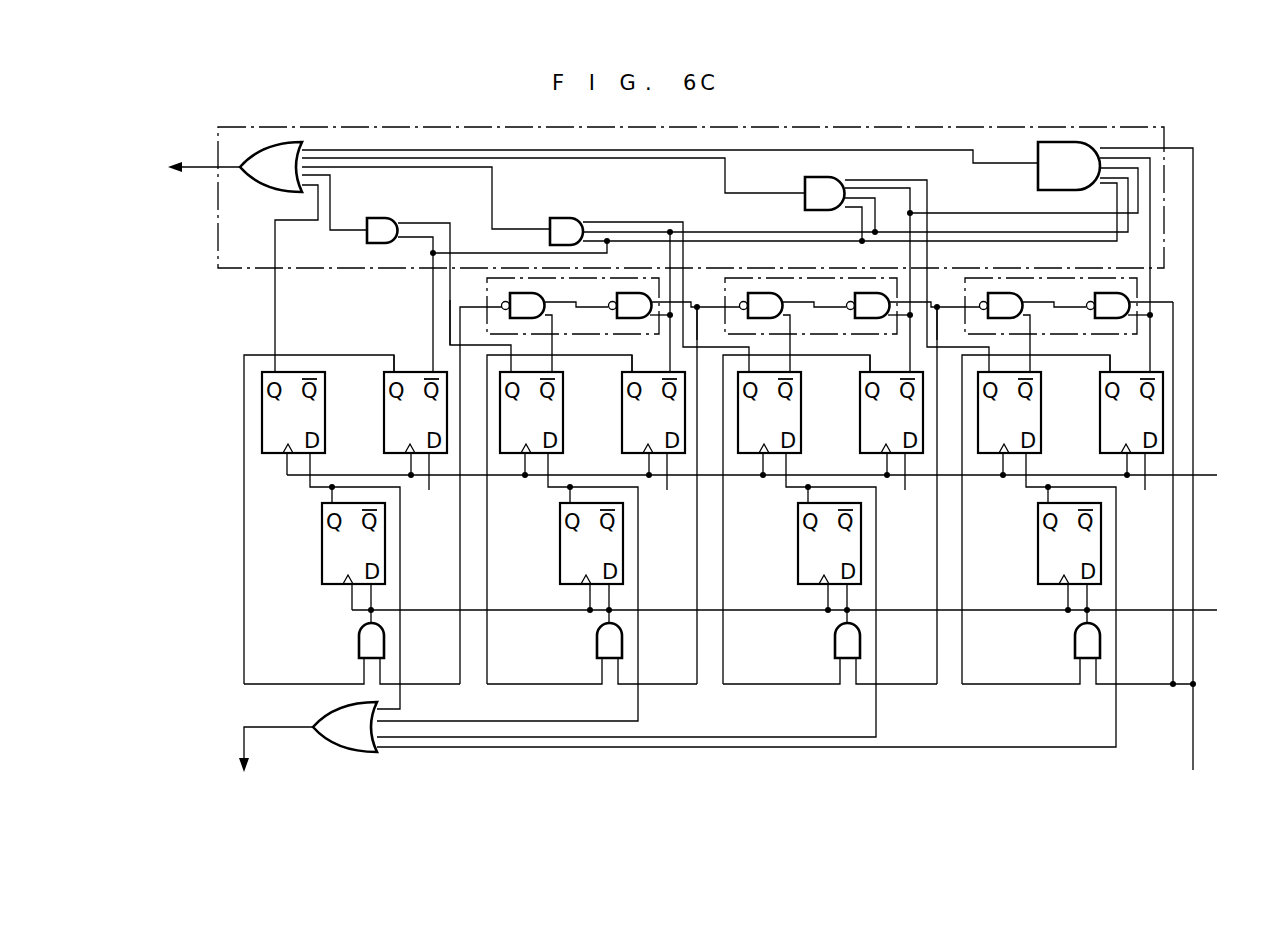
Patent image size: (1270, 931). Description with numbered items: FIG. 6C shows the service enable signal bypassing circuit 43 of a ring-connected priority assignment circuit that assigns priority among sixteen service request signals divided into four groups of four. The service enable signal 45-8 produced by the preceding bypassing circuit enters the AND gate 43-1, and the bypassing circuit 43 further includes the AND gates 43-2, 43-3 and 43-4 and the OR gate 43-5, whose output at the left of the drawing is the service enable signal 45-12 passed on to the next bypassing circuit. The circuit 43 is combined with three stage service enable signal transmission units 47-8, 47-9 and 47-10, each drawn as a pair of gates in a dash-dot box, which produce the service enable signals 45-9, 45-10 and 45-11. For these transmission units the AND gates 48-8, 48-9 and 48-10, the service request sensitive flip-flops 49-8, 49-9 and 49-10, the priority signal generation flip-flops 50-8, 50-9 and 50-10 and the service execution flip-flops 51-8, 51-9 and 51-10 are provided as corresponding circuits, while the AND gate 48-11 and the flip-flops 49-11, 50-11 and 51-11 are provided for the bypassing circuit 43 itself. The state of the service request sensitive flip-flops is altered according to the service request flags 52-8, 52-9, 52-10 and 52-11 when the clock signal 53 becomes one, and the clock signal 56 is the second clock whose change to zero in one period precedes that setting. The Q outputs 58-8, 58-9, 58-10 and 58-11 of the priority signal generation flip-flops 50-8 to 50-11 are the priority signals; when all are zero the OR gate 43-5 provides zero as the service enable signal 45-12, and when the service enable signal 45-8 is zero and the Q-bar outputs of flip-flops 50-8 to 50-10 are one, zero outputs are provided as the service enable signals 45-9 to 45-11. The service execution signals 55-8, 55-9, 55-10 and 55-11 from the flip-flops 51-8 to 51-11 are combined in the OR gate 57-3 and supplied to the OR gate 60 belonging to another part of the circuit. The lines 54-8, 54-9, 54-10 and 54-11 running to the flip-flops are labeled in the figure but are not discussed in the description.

The service enable signal bypassing circuit 43 is at (1118, 127).
The AND gate 43-1 is at (1050, 168).
The AND gate 43-2 is at (815, 190).
The AND gate 43-3 is at (566, 220).
The AND gate 43-4 is at (393, 200).
The OR gate 43-5 is at (275, 189).
The service enable signal 45-8 is at (1171, 459).
The service enable signal 45-9 is at (941, 300).
The service enable signal 45-10 is at (702, 300).
The service enable signal 45-11 is at (450, 322).
The service enable signal 45-12 is at (196, 153).
The service enable signal transmission unit 47-8 is at (1069, 325).
The service enable signal transmission unit 47-9 is at (831, 325).
The service enable signal transmission unit 47-10 is at (592, 325).
The AND gate 48-8 is at (1075, 642).
The AND gate 48-9 is at (835, 642).
The AND gate 48-10 is at (597, 642).
The AND gate 48-11 is at (359, 642).
The flip-flop responsive to service requests 49-8 is at (1118, 425).
The flip-flop responsive to service requests 49-9 is at (878, 425).
The flip-flop responsive to service requests 49-10 is at (640, 425).
The flip-flop responsive to service requests 49-11 is at (402, 425).
The flip-flop for producing priority signals 50-8 is at (1028, 402).
The flip-flop for producing priority signals 50-9 is at (788, 402).
The flip-flop for producing priority signals 50-10 is at (550, 402).
The flip-flop for producing priority signals 50-11 is at (312, 402).
The flip-flop for producing service execution signals 51-8 is at (1048, 546).
The flip-flop for producing service execution signals 51-9 is at (808, 546).
The flip-flop for producing service execution signals 51-10 is at (570, 546).
The flip-flop for producing service execution signals 51-11 is at (332, 546).
The service request flag 52-8 is at (773, 600).
The service request flag 52-9 is at (654, 595).
The service request flag 52-10 is at (540, 587).
The service request flag 52-11 is at (389, 581).
The clock signal 53 is at (767, 477).
The input line 54-8 is at (1104, 355).
The input line 54-9 is at (864, 355).
The input line 54-10 is at (620, 355).
The input line 54-11 is at (358, 355).
The service execution signal 55-8 is at (1116, 601).
The service execution signal 55-9 is at (876, 601).
The service execution signal 55-10 is at (644, 601).
The service execution signal 55-11 is at (408, 601).
The clock signal 56 is at (800, 614).
The OR gate 57-3 is at (335, 722).
The Q output 58-8 is at (957, 494).
The Q output 58-9 is at (717, 494).
The Q output 58-10 is at (481, 495).
The Q output 58-11 is at (264, 278).
The OR gate 60 is at (276, 754).